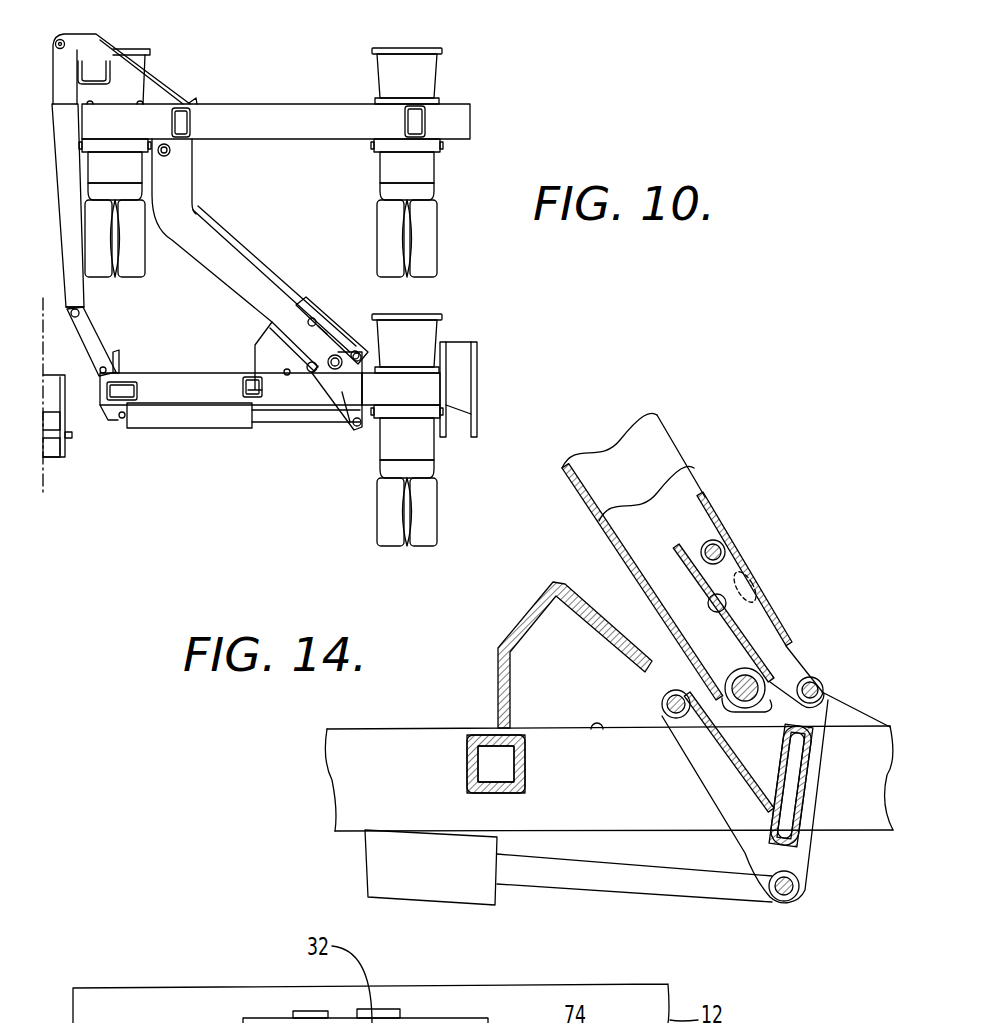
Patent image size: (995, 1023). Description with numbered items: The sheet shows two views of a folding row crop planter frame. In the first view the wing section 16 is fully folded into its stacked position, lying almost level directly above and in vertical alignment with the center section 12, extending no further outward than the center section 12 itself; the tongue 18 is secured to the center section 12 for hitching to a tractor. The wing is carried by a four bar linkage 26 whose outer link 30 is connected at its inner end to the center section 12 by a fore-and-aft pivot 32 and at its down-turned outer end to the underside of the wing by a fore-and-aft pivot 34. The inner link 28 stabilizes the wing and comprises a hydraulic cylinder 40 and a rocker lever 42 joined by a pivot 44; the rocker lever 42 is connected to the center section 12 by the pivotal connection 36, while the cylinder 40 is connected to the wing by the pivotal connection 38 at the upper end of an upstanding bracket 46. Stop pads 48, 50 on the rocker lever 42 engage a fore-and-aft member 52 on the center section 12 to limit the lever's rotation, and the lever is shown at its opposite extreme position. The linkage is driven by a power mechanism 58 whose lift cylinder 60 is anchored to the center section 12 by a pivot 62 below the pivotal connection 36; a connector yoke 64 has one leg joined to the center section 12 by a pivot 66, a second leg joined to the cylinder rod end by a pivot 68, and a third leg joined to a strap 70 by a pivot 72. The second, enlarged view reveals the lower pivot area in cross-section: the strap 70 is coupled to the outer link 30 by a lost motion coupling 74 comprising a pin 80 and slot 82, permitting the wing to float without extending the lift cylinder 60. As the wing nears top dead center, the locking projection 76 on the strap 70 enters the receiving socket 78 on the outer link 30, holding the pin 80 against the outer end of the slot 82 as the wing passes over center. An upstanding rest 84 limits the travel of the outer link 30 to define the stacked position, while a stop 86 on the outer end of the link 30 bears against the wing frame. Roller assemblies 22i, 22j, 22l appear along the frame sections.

In FIG. 10, the center section 12 is at (455, 392).
In FIG. 14, the center section 12 is at (338, 753).
In FIG. 10, the wing section 16 is at (470, 118).
In FIG. 10, the tongue 18 is at (58, 460).
In FIG. 10, the tube and roller assembly 22i is at (388, 531).
In FIG. 10, the tube and roller assembly 22j is at (137, 48).
In FIG. 10, the tube and roller assembly 22l is at (432, 246).
In FIG. 10, the four bar linkage 26 is at (212, 228).
In FIG. 10, the inner link 28 is at (96, 300).
In FIG. 10, the outer link 30 is at (228, 252).
In FIG. 14, the outer link 30 is at (648, 440).
In FIG. 10, the fore-and-aft pivot 32 is at (350, 385).
In FIG. 14, the fore-and-aft pivot 32 is at (722, 690).
In FIG. 10, the fore-and-aft pivot 34 is at (186, 160).
In FIG. 10, the pivotal connection 36 is at (103, 370).
In FIG. 10, the pivotal connection 38 is at (60, 40).
In FIG. 10, the hydraulic cylinder 40 is at (68, 122).
In FIG. 10, the rocker lever 42 is at (105, 352).
In FIG. 10, the pivot 44 is at (80, 316).
In FIG. 10, the upstanding bracket 46 is at (143, 88).
In FIG. 10, the stop pad 48 is at (122, 360).
In FIG. 10, the stop pad 50 is at (108, 412).
In FIG. 10, the fore-and-aft member 52 is at (140, 390).
In FIG. 10, the power mechanism 58 is at (213, 437).
In FIG. 14, the power mechanism 58 is at (642, 895).
In FIG. 10, the lift cylinder 60 is at (175, 420).
In FIG. 14, the lift cylinder 60 is at (368, 870).
In FIG. 10, the pivot 62 is at (122, 420).
In FIG. 10, the connector yoke 64 is at (340, 410).
In FIG. 14, the connector yoke 64 is at (725, 785).
In FIG. 10, the pivot 66 is at (300, 383).
In FIG. 14, the pivot 66 is at (660, 708).
In FIG. 10, the pivot 68 is at (358, 428).
In FIG. 14, the pivot 68 is at (796, 895).
In FIG. 14, the strap 70 is at (790, 663).
In FIG. 14, the pivot 72 is at (826, 686).
In FIG. 10, the lost motion coupling 74 is at (330, 316).
In FIG. 14, the lost motion coupling 74 is at (756, 543).
In FIG. 14, the locking projection 76 is at (708, 604).
In FIG. 14, the receiving socket 78 is at (730, 622).
In FIG. 14, the pin 80 is at (718, 540).
In FIG. 14, the slot 82 is at (762, 600).
In FIG. 10, the upstanding rest 84 is at (262, 335).
In FIG. 14, the upstanding rest 84 is at (590, 600).
In FIG. 10, the stop 86 is at (172, 150).